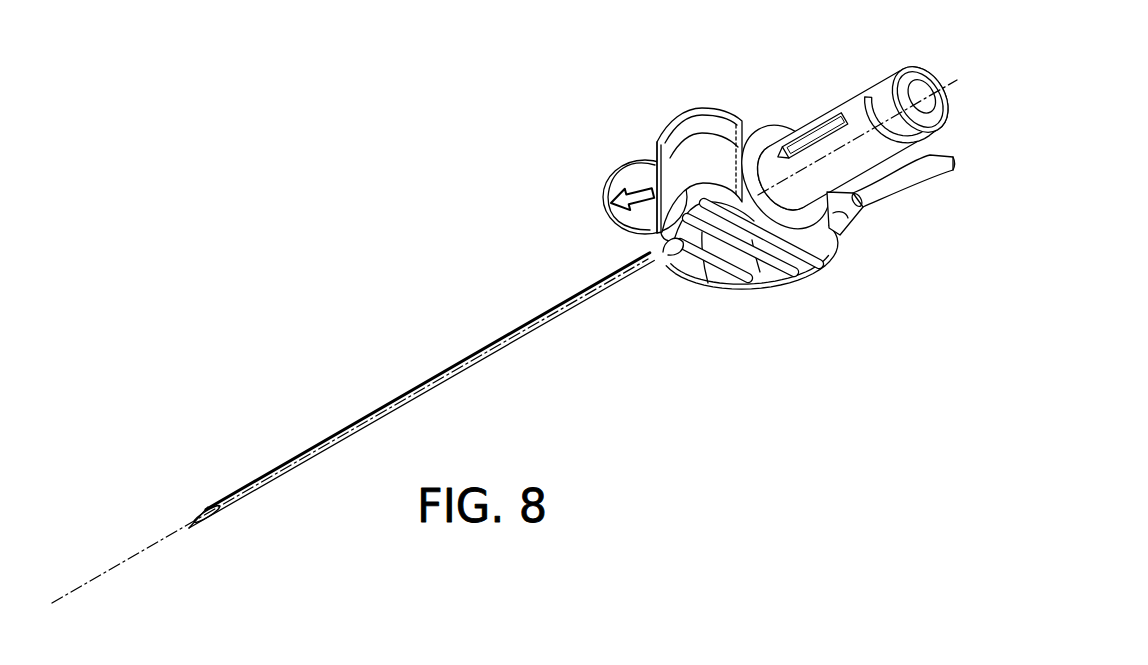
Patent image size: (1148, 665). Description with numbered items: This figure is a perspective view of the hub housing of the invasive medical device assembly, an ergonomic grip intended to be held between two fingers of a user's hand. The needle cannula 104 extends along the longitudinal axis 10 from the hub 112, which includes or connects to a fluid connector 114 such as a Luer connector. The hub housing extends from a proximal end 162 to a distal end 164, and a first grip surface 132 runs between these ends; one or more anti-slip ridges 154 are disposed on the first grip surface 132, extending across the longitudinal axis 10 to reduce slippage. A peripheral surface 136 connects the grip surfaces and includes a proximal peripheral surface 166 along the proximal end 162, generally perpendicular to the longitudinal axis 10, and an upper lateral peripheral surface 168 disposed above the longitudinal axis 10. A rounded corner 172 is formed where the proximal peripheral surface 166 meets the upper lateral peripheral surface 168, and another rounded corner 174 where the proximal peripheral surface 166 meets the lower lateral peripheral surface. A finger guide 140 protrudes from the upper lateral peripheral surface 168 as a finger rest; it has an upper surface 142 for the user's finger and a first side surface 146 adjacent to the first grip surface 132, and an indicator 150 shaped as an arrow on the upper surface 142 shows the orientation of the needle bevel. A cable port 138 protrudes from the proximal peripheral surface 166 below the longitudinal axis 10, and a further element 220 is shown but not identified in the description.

The longitudinal axis 10 is at (150, 542).
The needle cannula 104 is at (396, 401).
The hub 112 is at (857, 114).
The fluid connector 114 is at (919, 97).
The first grip surface 132 is at (790, 287).
The peripheral surface 136 is at (735, 130).
The cable port 138 is at (847, 218).
The finger guide 140 is at (598, 205).
The upper surface 142 is at (640, 170).
The first side surface 146 is at (652, 253).
The indicator 150 is at (622, 190).
The anti-slip ridges 154 is at (736, 267).
The proximal end 162 is at (871, 284).
The distal end 164 is at (665, 285).
The proximal peripheral surface 166 is at (773, 135).
The upper lateral peripheral surface 168 is at (658, 145).
The rounded corner 172 is at (700, 150).
The rounded corner 174 is at (836, 280).
The side tube 220 is at (908, 174).